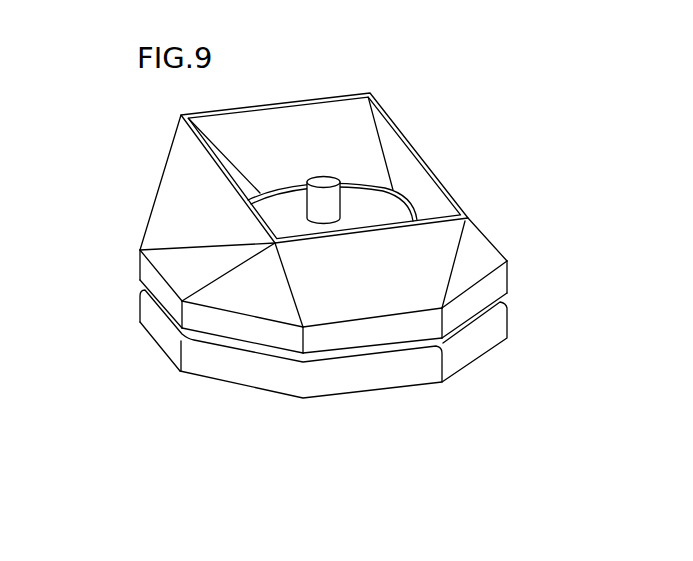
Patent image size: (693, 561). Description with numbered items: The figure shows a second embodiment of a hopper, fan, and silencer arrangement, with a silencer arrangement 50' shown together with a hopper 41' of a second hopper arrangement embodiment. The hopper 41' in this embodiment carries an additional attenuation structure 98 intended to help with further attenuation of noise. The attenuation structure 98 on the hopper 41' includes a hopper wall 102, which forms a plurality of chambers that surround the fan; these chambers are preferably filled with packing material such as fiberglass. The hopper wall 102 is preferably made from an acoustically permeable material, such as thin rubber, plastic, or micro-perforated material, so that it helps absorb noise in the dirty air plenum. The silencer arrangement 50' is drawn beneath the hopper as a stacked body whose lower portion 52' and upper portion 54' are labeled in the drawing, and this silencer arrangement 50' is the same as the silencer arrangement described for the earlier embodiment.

The hopper 41' is at (345, 153).
The attenuation structure 98 is at (515, 175).
The hopper wall 102 is at (162, 187).
The silencer arrangement 50' is at (395, 348).
The lower base member 52' is at (330, 348).
The upper base member 54' is at (323, 348).